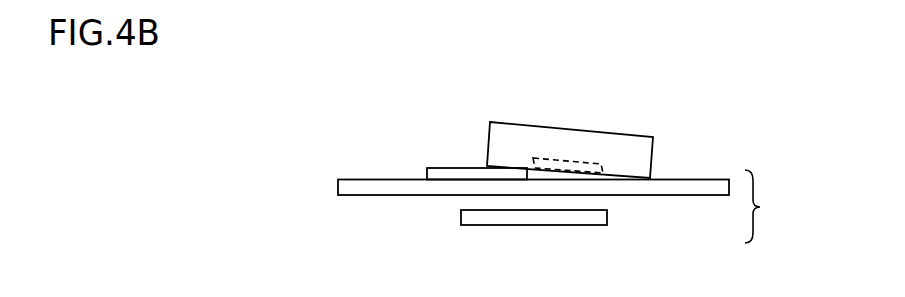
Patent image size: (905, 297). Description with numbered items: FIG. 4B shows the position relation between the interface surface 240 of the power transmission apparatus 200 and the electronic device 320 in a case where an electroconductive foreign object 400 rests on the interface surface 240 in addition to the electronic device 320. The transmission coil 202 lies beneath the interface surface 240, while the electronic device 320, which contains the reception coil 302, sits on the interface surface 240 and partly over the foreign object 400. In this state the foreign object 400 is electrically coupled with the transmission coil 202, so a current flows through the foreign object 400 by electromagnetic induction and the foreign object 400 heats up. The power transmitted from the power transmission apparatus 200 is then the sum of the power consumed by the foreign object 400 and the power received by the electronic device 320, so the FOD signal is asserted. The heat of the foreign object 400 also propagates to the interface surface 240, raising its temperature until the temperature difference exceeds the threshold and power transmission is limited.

The power transmission apparatus 200 is at (572, 231).
The interface surface 240 is at (355, 188).
The transmission coil 202 is at (477, 218).
The electroconductive foreign object 400 is at (442, 170).
The electronic device 320 is at (628, 152).
The reception coil 302 is at (548, 160).